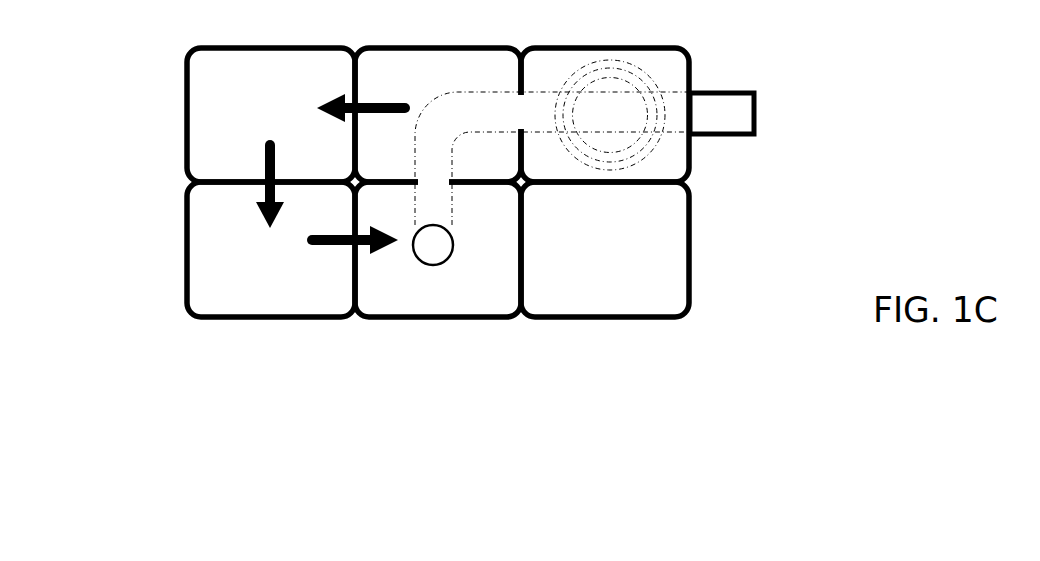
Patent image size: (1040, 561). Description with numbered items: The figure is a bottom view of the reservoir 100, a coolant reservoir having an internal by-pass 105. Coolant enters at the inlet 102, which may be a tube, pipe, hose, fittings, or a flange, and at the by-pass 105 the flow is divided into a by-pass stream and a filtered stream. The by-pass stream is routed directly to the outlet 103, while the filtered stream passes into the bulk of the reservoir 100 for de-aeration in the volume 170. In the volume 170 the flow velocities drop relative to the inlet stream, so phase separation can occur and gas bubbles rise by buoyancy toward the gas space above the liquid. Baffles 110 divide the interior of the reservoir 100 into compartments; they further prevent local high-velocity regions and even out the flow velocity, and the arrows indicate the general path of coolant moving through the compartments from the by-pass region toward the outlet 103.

The reservoir 100 is at (457, 20).
The inlet 102 is at (755, 112).
The outlet 103 is at (437, 247).
The by-pass 105 is at (556, 82).
The baffles 110 is at (350, 70).
The volume 170 is at (287, 87).